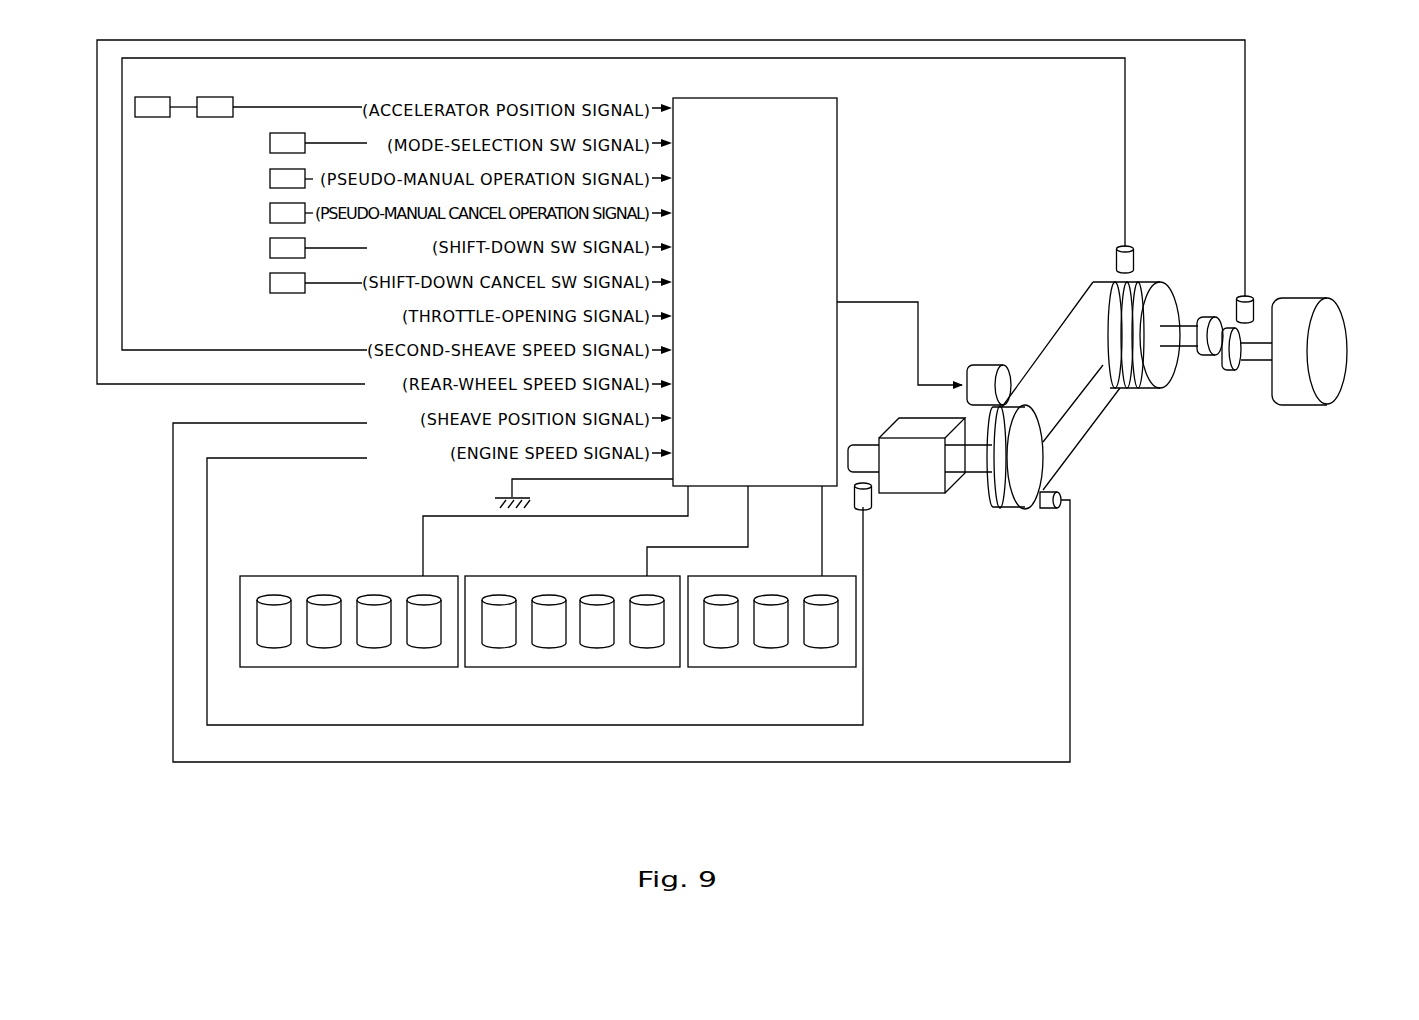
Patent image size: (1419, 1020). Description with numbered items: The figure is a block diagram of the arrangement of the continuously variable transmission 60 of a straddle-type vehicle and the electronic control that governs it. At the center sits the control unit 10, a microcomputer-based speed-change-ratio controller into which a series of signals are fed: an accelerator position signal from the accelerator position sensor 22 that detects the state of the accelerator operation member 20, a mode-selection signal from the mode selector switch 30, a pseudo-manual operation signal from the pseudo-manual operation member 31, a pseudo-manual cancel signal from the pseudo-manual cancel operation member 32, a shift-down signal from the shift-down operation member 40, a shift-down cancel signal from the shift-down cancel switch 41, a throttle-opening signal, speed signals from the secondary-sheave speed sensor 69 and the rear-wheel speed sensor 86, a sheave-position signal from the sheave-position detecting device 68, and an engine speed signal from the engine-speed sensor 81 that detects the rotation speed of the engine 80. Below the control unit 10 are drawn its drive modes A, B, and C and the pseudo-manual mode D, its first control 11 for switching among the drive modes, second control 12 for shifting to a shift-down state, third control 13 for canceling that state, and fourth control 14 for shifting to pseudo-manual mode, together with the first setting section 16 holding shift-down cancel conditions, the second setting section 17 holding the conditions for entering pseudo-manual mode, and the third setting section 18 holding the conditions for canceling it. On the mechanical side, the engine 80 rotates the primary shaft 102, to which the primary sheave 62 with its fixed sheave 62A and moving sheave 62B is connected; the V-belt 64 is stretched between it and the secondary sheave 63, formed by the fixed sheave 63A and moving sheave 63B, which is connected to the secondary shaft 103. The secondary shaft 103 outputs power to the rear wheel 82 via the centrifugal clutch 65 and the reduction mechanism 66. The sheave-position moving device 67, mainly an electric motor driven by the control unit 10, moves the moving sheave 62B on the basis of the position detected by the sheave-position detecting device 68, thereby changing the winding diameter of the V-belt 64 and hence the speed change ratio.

The control unit 10 is at (837, 218).
The accelerator operation member 20 is at (152, 117).
The accelerator position sensor 22 is at (212, 117).
The mode selector switch 30 is at (295, 133).
The pseudo-manual operation member 31 is at (270, 179).
The pseudo-manual cancel operation member 32 is at (270, 213).
The shift-down operation member 40 is at (270, 247).
The shift-down cancel switch 41 is at (270, 282).
The drive mode A is at (274, 645).
The drive mode B is at (324, 645).
The drive mode C is at (374, 645).
The pseudo-manual mode D is at (424, 645).
The first control 11 is at (499, 645).
The second control 12 is at (549, 645).
The third control 13 is at (597, 645).
The fourth control 14 is at (647, 645).
The first setting section 16 is at (721, 645).
The second setting section 17 is at (771, 645).
The third setting section 18 is at (821, 645).
The continuously variable transmission 60 is at (1031, 322).
The primary sheave 62 is at (1041, 510).
The fixed sheave 62A is at (1028, 509).
The moving sheave 62B is at (993, 508).
The secondary sheave 63 is at (1134, 354).
The fixed sheave 63A is at (1120, 312).
The moving sheave 63B is at (1076, 350).
The V-belt 64 is at (1090, 428).
The centrifugal clutch 65 is at (1172, 300).
The reduction mechanism 66 is at (1238, 372).
The sheave-position moving device 67 is at (982, 364).
The sheave-position detecting device 68 is at (1063, 500).
The secondary-sheave speed sensor 69 is at (1117, 252).
The engine 80 is at (928, 493).
The engine-speed sensor 81 is at (872, 498).
The rear wheel 82 is at (1340, 362).
The rear-wheel speed sensor 86 is at (1253, 303).
The primary shaft 102 is at (972, 466).
The secondary shaft 103 is at (1180, 346).